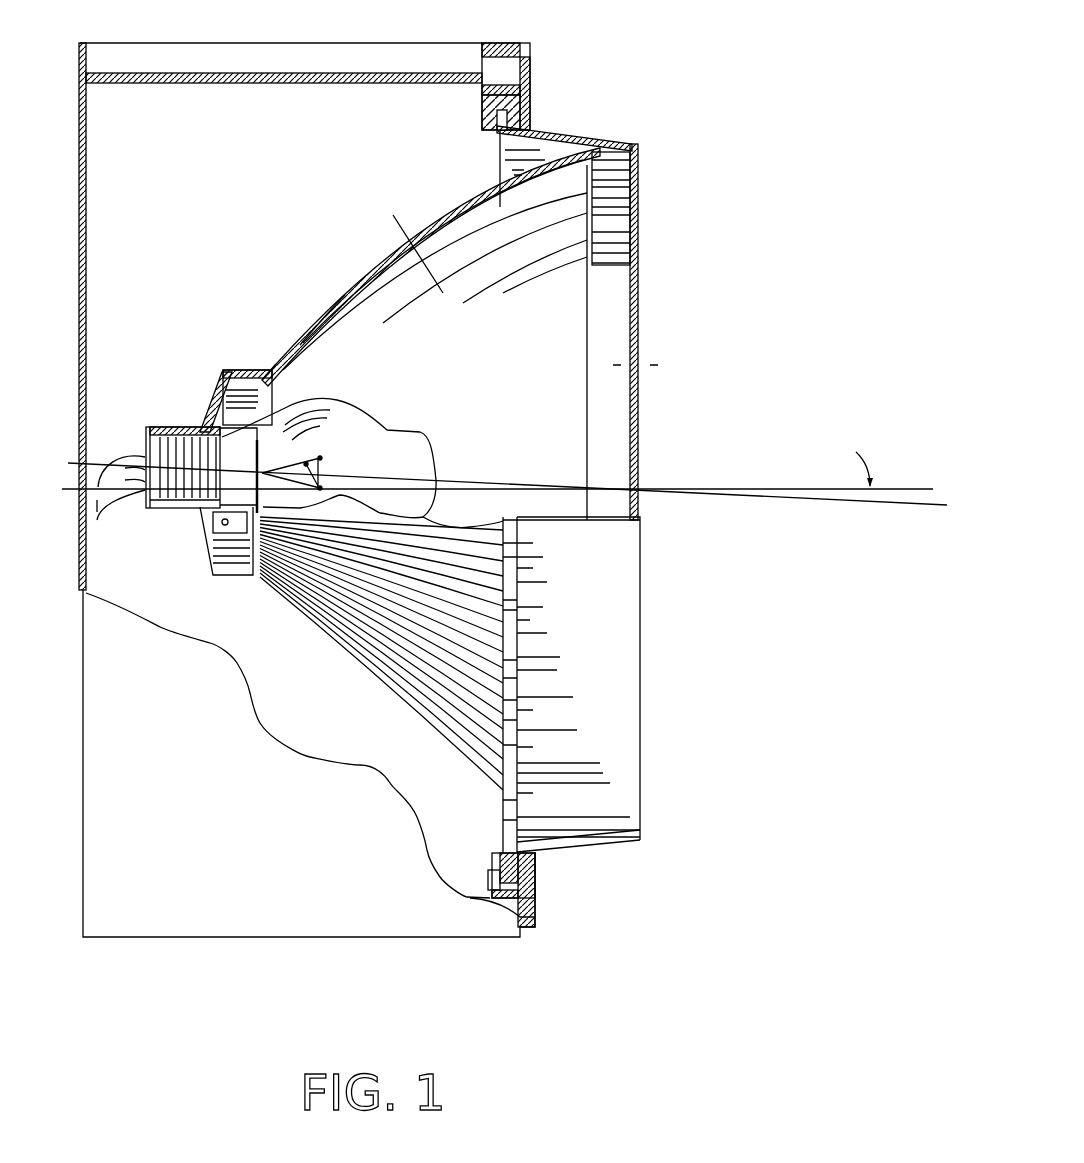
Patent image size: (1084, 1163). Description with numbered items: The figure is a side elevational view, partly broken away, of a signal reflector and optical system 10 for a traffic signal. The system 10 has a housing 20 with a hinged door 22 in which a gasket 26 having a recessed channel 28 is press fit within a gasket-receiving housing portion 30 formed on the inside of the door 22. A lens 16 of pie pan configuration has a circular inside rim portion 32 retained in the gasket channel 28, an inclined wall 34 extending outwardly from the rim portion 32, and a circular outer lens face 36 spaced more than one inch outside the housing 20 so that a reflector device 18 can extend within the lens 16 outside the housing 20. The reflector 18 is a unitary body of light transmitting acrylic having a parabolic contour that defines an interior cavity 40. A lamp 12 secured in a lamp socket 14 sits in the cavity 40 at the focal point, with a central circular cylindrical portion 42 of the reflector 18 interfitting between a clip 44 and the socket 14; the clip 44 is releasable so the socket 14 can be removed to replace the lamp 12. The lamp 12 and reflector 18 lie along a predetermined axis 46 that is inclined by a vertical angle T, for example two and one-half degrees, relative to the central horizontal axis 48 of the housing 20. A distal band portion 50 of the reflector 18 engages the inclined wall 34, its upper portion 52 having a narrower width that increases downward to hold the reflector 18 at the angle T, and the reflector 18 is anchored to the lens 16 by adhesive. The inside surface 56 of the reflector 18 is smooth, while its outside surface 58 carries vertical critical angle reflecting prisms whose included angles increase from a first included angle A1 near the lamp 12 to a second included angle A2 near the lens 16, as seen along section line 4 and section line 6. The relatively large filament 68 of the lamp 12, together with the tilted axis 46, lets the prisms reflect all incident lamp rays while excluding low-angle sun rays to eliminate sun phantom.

The signal reflector and optical system 10 is at (551, 45).
The lamp 12 is at (376, 411).
The lamp socket 14 is at (226, 578).
The lens 16 is at (645, 313).
The reflector device 18 is at (450, 220).
The housing 20 is at (205, 86).
The hinged door 22 is at (533, 102).
The gasket 26 is at (487, 122).
The recessed channel 28 is at (511, 173).
The gasket-receiving housing portion 30 is at (487, 882).
The inside rim portion 32 is at (506, 803).
The inclined wall 34 is at (583, 852).
The outer lens face 36 is at (648, 667).
The interior cavity 40 is at (513, 370).
The central circular cylindrical portion 42 is at (245, 366).
The clip 44 is at (222, 356).
The predetermined axis 46 is at (441, 482).
The central horizontal axis 48 is at (780, 487).
The distal band portion 50 is at (622, 293).
The upper portion 52 is at (613, 186).
The inside surface 56 is at (306, 340).
The outside surface 58 is at (321, 300).
The filament 68 is at (323, 461).
The section line 4- 4 is at (393, 215).
The section line 6- 6 is at (613, 365).
The first predetermined included angle A1 is at (272, 350).
The second predetermined included angle A2 is at (616, 146).
The vertical angle T is at (870, 504).